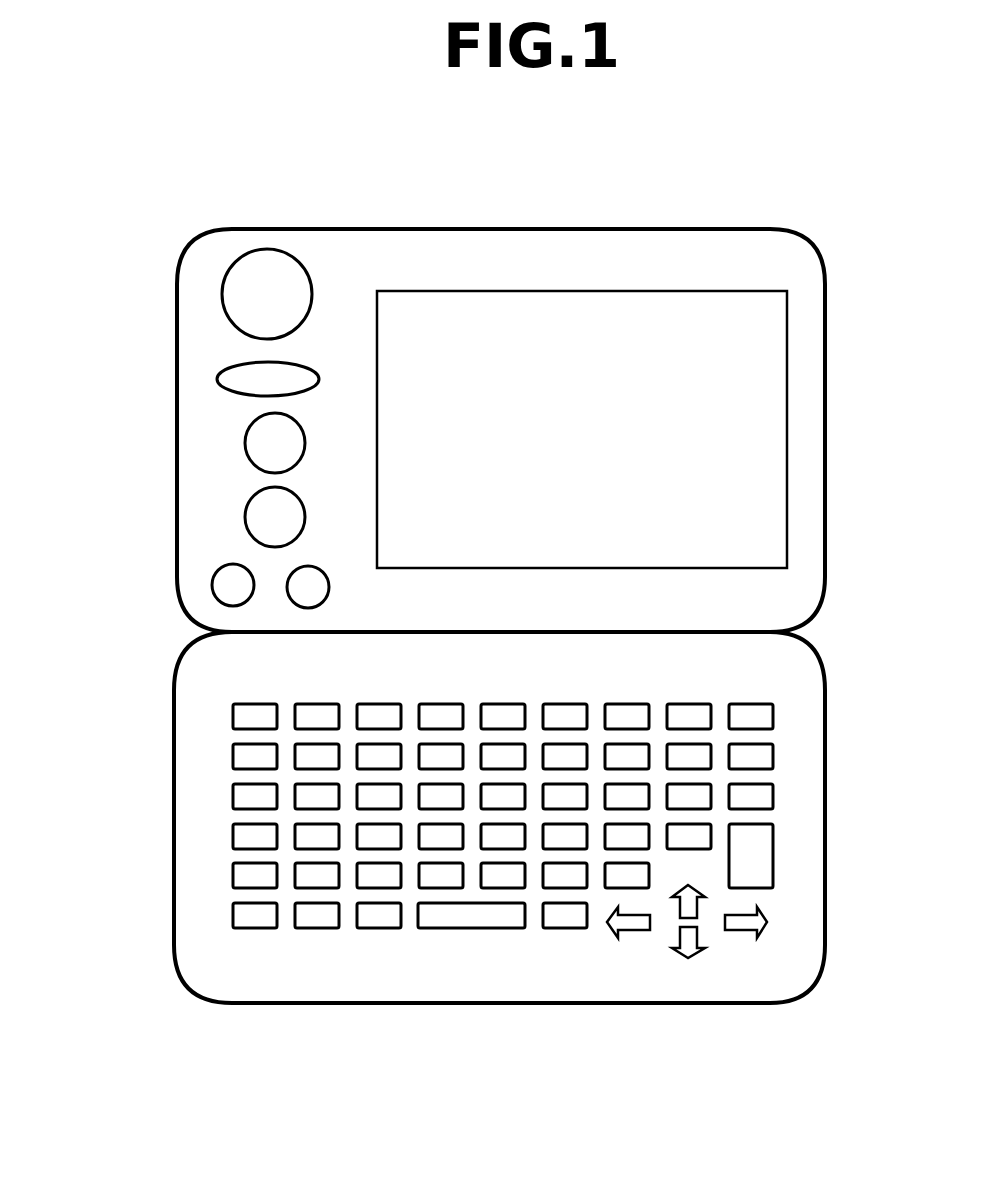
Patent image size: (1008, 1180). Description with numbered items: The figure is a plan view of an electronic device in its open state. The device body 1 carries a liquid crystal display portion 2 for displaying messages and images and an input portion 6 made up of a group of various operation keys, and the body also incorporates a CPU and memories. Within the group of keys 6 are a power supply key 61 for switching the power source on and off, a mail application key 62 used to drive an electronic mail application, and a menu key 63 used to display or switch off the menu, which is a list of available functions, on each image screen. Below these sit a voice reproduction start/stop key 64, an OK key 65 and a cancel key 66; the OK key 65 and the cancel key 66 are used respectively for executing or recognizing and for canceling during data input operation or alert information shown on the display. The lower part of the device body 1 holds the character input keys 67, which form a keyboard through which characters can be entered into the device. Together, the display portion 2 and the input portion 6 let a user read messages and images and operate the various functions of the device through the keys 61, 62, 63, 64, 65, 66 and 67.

The device body 1 is at (450, 541).
The liquid crystal display portion 2 is at (765, 396).
The input portion 6 is at (88, 253).
The power supply key 61 is at (245, 299).
The mail application key 62 is at (228, 384).
The menu key 63 is at (252, 448).
The voice reproduction start/stop key 64 is at (252, 522).
The OK key 65 is at (220, 583).
The cancel key 66 is at (303, 590).
The character input keys 67 is at (242, 793).